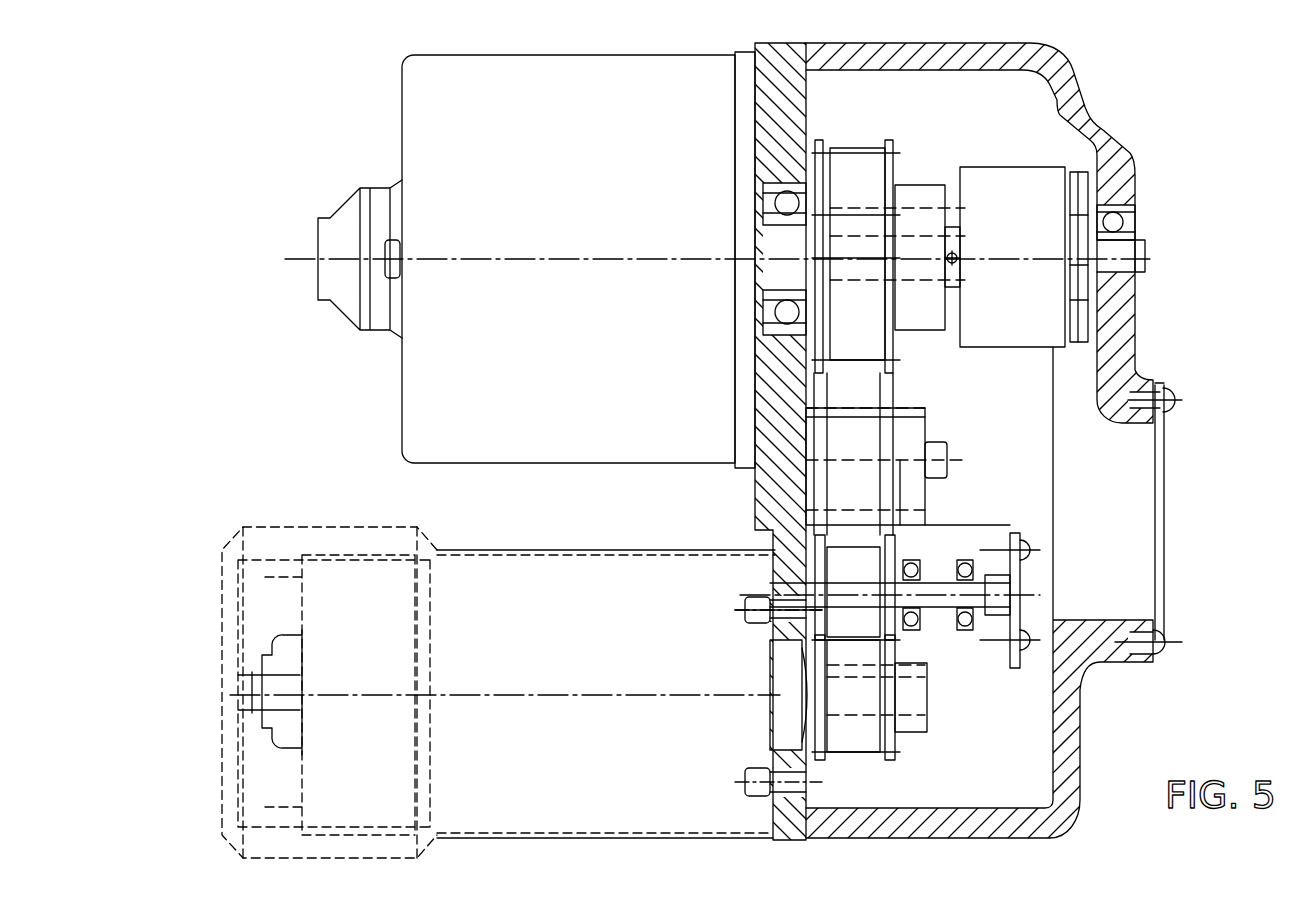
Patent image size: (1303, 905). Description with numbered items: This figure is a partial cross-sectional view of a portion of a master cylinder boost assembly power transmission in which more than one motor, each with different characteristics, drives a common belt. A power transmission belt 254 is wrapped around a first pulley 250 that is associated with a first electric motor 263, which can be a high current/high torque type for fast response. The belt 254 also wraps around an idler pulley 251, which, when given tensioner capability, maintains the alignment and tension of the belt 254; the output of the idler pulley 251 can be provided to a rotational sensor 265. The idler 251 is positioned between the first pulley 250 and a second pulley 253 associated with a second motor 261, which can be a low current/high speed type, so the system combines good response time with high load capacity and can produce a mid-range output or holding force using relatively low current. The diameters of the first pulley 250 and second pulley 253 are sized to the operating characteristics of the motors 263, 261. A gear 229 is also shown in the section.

The gear 229 is at (1027, 337).
The first pulley 250 is at (893, 140).
The idler pulley 251 is at (895, 545).
The second pulley 253 is at (893, 748).
The power transmission belt 254 is at (867, 388).
The second motor 261 is at (715, 567).
The first electric motor 263 is at (648, 450).
The rotational sensor 265 is at (1010, 526).